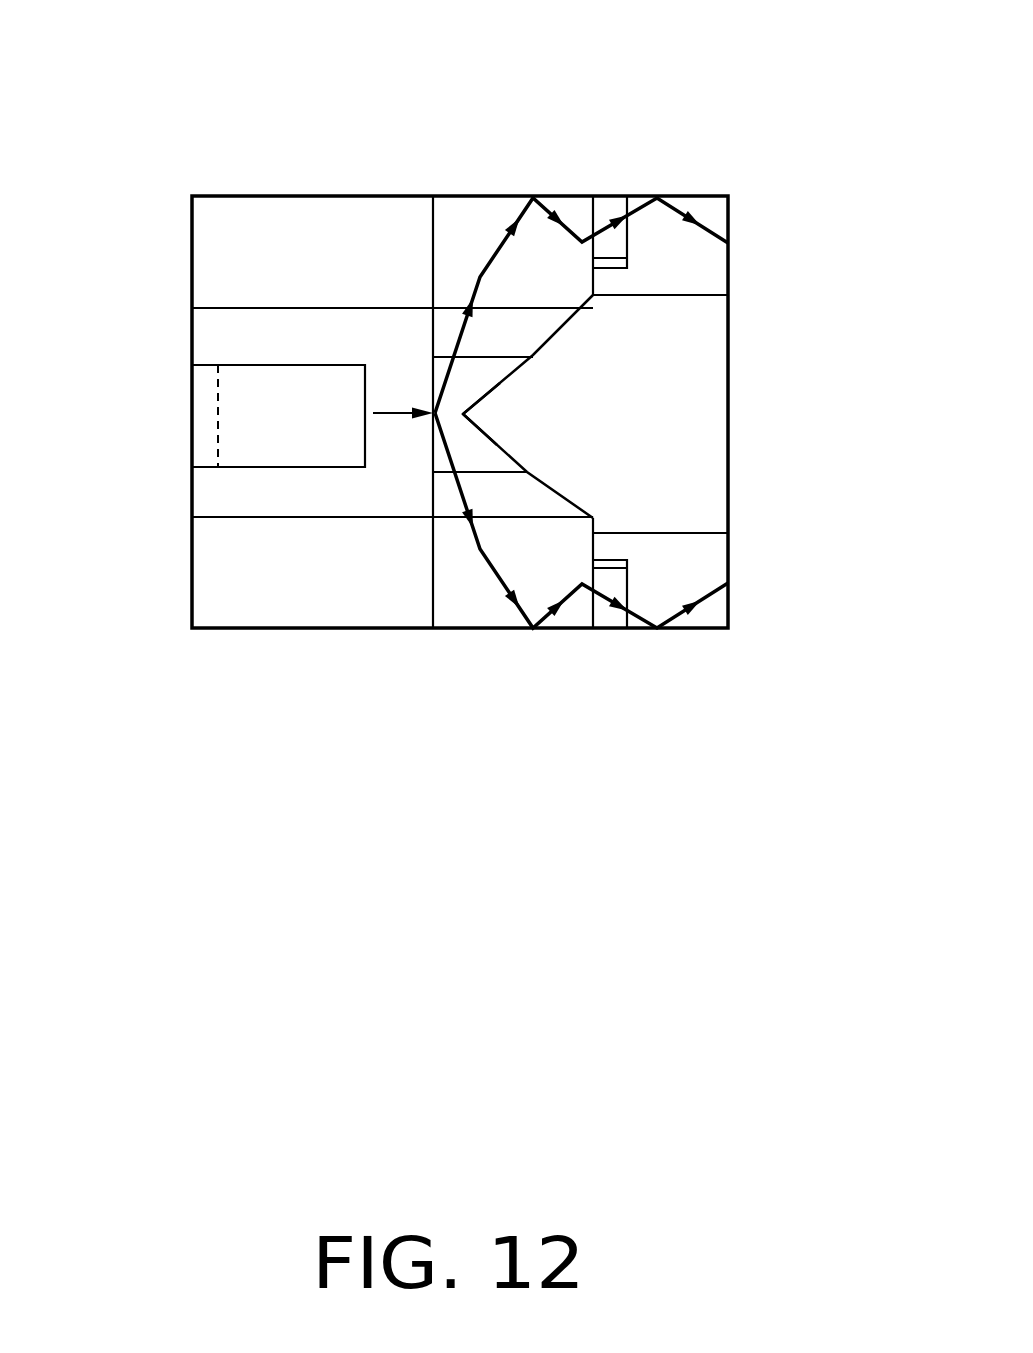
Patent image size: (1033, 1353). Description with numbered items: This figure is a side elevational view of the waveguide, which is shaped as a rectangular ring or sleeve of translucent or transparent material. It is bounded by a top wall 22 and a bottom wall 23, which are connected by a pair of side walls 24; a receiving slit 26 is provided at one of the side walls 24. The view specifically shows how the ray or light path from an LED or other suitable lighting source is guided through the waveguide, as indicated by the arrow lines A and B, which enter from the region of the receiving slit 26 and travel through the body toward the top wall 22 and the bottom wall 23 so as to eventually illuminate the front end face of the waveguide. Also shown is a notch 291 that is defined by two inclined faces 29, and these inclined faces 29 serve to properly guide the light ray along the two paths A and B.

The top wall 22 is at (360, 196).
The bottom wall 23 is at (478, 630).
The side wall 24 is at (563, 255).
The receiving slit 26 is at (250, 407).
The inclined face 29 is at (510, 380).
The notch 291 is at (537, 430).
The arrow line A is at (480, 277).
The arrow line B is at (480, 549).